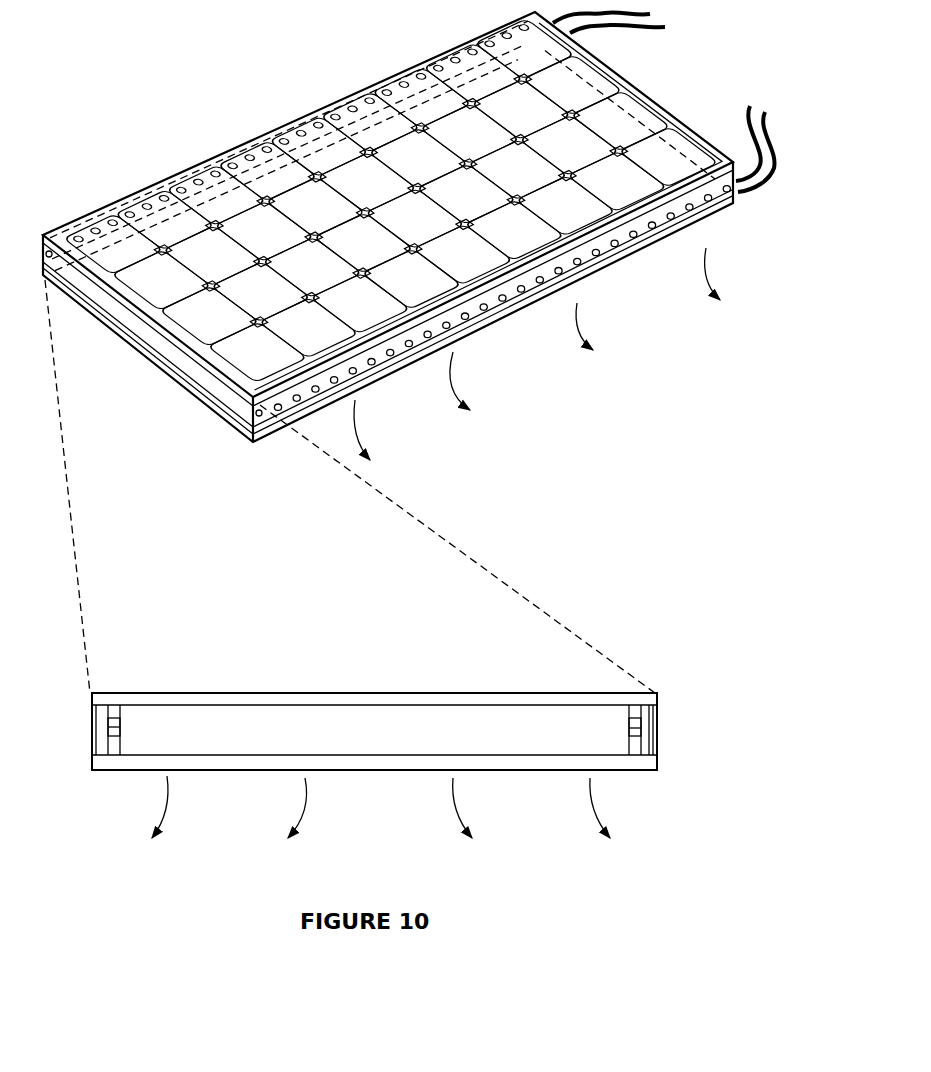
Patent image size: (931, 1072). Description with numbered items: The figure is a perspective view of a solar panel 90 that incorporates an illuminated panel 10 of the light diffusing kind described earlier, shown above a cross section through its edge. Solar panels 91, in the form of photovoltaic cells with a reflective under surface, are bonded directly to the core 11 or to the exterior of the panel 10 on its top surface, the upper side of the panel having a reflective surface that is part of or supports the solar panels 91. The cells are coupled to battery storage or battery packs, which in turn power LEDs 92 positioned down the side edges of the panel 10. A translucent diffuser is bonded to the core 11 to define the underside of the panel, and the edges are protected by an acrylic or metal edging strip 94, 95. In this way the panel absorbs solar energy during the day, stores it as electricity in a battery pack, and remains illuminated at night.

The illuminated panel 10 is at (511, 298).
The core 11 is at (318, 729).
The solar panel 90 is at (660, 87).
The solar panels 91 is at (546, 153).
The LEDs 92 is at (346, 117).
The edging strip 94 is at (657, 710).
The edging strip 95 is at (92, 706).